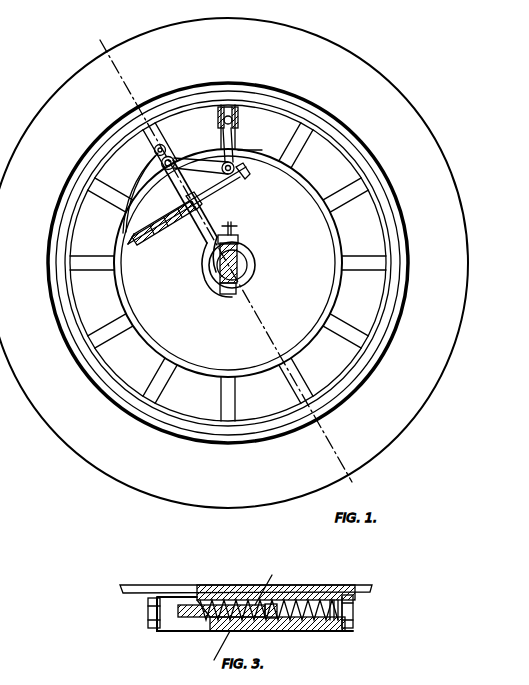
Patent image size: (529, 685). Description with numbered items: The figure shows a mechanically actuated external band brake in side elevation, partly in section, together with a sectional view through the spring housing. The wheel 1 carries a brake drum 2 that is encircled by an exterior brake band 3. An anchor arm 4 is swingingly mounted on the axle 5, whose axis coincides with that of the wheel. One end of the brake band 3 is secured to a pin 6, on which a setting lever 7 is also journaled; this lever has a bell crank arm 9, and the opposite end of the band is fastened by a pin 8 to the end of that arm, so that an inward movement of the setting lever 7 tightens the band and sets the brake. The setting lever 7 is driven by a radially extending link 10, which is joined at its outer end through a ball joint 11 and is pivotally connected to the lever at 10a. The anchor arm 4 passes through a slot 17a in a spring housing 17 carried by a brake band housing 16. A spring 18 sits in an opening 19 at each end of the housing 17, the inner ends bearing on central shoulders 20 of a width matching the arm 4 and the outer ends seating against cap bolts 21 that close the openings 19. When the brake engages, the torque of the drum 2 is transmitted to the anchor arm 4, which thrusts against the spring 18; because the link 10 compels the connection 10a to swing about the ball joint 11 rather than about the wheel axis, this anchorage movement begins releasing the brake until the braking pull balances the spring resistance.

In FIG. 1, the wheel 1 is at (433, 167).
In FIG. 1, the brake drum 2 is at (333, 237).
In FIG. 1, the exterior brake band 3 is at (260, 167).
In FIG. 1, the anchor arm 4 is at (200, 225).
In FIG. 3, the anchor arm 4 is at (213, 652).
In FIG. 1, the axle 5 is at (243, 258).
In FIG. 1, the pin 6 is at (176, 160).
In FIG. 1, the setting lever 7 is at (200, 164).
In FIG. 1, the pin 8 is at (162, 144).
In FIG. 1, the bell crank arm 9 is at (154, 152).
In FIG. 1, the link 10 is at (237, 142).
In FIG. 1, the pivotal connection 10a is at (250, 158).
In FIG. 1, the ball joint 11 is at (240, 107).
In FIG. 1, the brake band housing 16 is at (330, 291).
In FIG. 1, the spring housing 17 is at (232, 190).
In FIG. 3, the spring housing 17 is at (190, 632).
In FIG. 1, the slot 17a is at (156, 253).
In FIG. 3, the slot 17a is at (272, 575).
In FIG. 1, the spring 18 is at (164, 223).
In FIG. 3, the spring 18 is at (212, 600).
In FIG. 1, the openings 19 is at (183, 201).
In FIG. 3, the openings 19 is at (335, 597).
In FIG. 3, the shoulders 20 is at (280, 598).
In FIG. 3, the cap bolts 21 is at (148, 614).